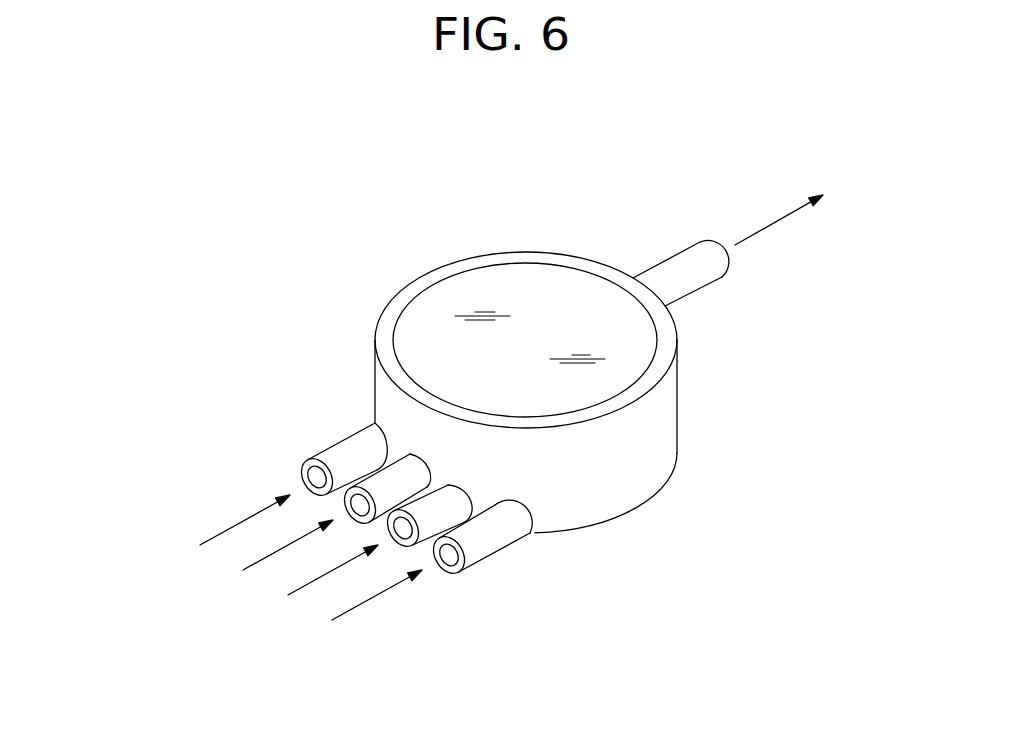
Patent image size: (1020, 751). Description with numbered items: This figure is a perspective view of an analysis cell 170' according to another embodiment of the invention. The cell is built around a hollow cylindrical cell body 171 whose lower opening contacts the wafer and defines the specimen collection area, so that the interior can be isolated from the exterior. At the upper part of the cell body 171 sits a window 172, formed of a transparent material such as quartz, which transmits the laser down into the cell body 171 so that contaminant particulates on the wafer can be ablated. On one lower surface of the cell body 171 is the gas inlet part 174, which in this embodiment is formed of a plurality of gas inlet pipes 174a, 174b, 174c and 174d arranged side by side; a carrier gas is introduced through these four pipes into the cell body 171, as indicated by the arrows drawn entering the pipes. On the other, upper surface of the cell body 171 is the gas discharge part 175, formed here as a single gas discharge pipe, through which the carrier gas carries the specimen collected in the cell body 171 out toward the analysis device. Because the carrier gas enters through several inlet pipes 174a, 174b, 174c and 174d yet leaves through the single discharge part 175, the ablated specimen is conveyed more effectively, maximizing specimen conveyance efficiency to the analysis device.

The analysis cell 170' is at (503, 392).
The cell body 171 is at (618, 490).
The window 172 is at (505, 283).
The gas inlet part 174 is at (374, 506).
The gas inlet pipe 174a is at (338, 463).
The gas inlet pipe 174b is at (387, 480).
The gas inlet pipe 174c is at (453, 502).
The gas inlet pipe 174d is at (478, 547).
The gas discharge part 175 is at (692, 262).